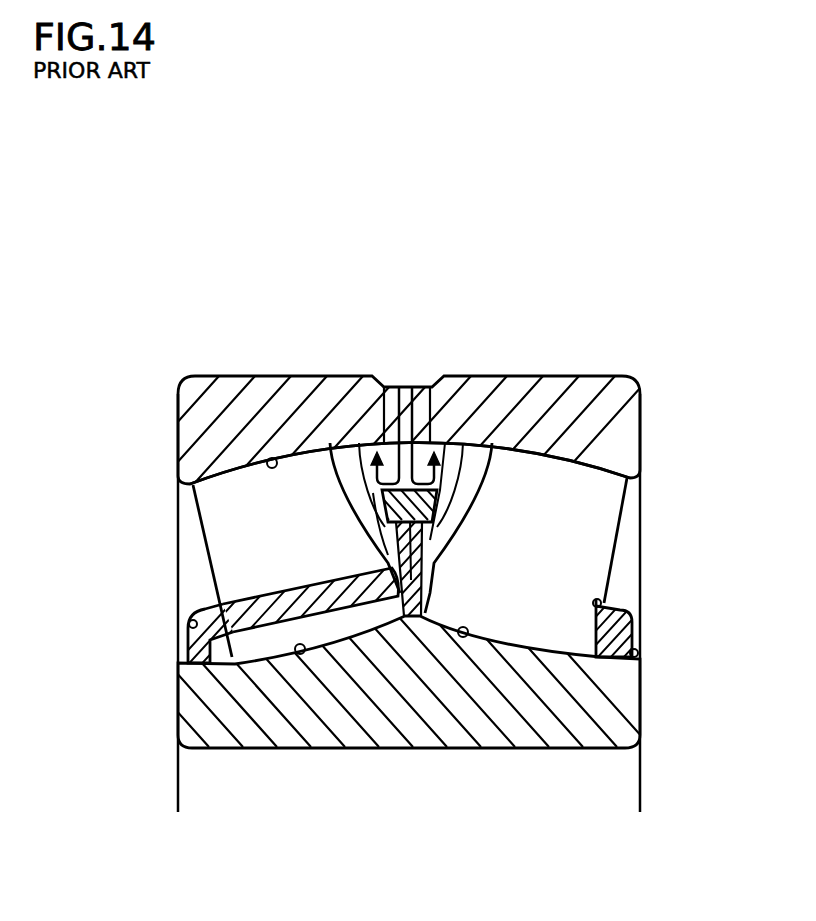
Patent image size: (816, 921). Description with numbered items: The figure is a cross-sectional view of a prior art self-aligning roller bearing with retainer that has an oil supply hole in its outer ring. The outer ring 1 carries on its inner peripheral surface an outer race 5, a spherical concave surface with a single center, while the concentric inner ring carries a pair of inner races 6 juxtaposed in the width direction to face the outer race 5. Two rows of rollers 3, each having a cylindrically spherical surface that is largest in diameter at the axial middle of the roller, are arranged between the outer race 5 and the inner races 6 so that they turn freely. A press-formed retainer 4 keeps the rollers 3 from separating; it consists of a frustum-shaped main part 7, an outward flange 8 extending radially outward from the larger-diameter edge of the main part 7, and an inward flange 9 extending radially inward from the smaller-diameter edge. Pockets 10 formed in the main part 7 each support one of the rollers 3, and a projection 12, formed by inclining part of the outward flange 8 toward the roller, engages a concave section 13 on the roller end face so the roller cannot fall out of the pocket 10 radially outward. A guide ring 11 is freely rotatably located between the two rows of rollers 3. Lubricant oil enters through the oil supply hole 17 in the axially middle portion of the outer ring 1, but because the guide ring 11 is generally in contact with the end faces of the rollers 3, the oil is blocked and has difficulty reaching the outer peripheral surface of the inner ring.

The outer ring 1 is at (627, 408).
The rollers 3 is at (237, 482).
The retainers 4 is at (273, 596).
The outer race 5 is at (272, 458).
The inner races 6 is at (300, 654).
The main part 7 is at (213, 603).
The outward flange 8 is at (333, 445).
The inward flange 9 is at (190, 636).
The pockets 10 is at (620, 600).
The guide ring 11 is at (473, 440).
The projection 12 is at (418, 612).
The concave section 13 is at (400, 592).
The oil supply hole 17 is at (396, 388).